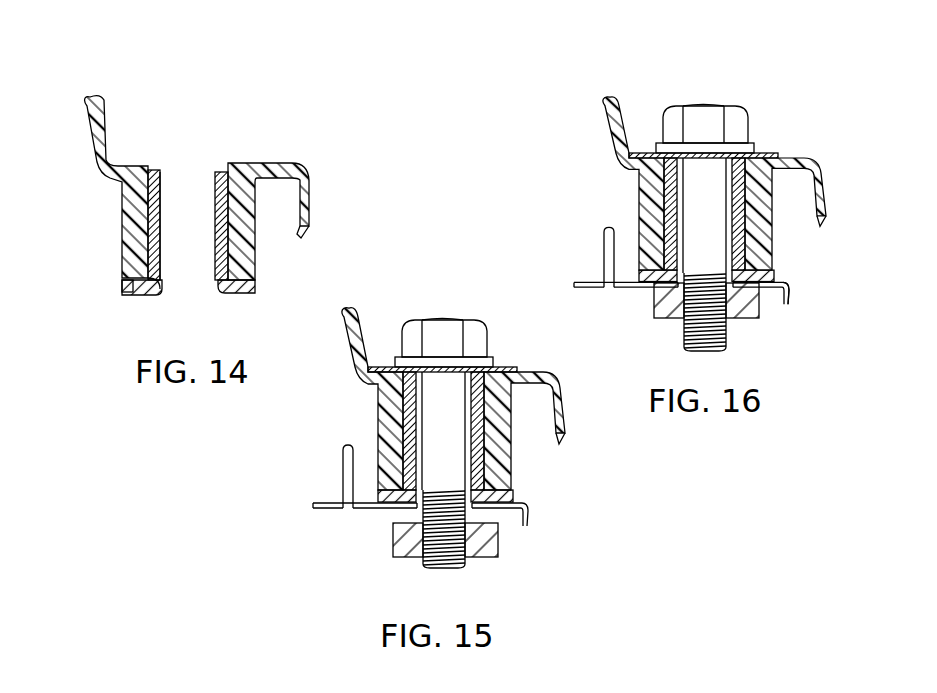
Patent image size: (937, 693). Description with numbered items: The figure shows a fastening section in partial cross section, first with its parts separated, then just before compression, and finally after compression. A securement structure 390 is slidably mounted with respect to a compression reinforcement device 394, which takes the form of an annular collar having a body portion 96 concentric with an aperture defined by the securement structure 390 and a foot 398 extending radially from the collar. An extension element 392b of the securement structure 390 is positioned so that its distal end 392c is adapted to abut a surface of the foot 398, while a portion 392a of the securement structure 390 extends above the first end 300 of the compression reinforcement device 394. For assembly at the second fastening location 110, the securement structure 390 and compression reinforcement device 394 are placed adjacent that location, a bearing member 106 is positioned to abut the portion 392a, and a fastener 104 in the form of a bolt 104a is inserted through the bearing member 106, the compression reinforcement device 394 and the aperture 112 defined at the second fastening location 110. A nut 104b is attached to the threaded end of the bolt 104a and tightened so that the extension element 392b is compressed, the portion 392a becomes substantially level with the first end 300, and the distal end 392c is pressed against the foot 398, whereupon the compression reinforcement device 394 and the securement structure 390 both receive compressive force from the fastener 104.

In FIG. 14, the securement structure 390 is at (196, 209).
In FIG. 15, the securement structure 390 is at (439, 372).
In FIG. 16, the securement structure 390 is at (732, 177).
In FIG. 14, the portion of the securement structure 392a is at (240, 165).
In FIG. 15, the portion of the securement structure 392a is at (393, 367).
In FIG. 16, the portion of the securement structure 392a is at (760, 152).
In FIG. 14, the extension element 392b is at (118, 276).
In FIG. 15, the extension element 392b is at (372, 399).
In FIG. 16, the extension element 392b is at (779, 261).
In FIG. 14, the distal end of the extension element 392c is at (121, 289).
In FIG. 16, the distal end of the extension element 392c is at (790, 291).
In FIG. 14, the compression reinforcement device 394 is at (172, 276).
In FIG. 15, the compression reinforcement device 394 is at (423, 437).
In FIG. 16, the compression reinforcement device 394 is at (730, 210).
In FIG. 14, the foot 398 is at (128, 296).
In FIG. 15, the foot 398 is at (445, 496).
In FIG. 16, the foot 398 is at (638, 284).
In FIG. 14, the first end of the compression reinforcement device 300 is at (156, 171).
In FIG. 15, the first end of the compression reinforcement device 300 is at (448, 398).
In FIG. 16, the first end of the compression reinforcement device 300 is at (705, 180).
In FIG. 14, the body portion 96 is at (163, 242).
In FIG. 15, the fastener 104 is at (499, 436).
In FIG. 16, the fastener 104 is at (701, 245).
In FIG. 15, the bolt 104a is at (470, 320).
In FIG. 16, the bolt 104a is at (705, 124).
In FIG. 15, the nut 104b is at (485, 565).
In FIG. 16, the nut 104b is at (755, 326).
In FIG. 15, the bearing member 106 is at (498, 366).
In FIG. 16, the bearing member 106 is at (703, 150).
In FIG. 15, the second fastening location 110 is at (372, 508).
In FIG. 16, the second fastening location 110 is at (719, 265).
In FIG. 15, the aperture 112 is at (394, 552).
In FIG. 16, the aperture 112 is at (706, 300).